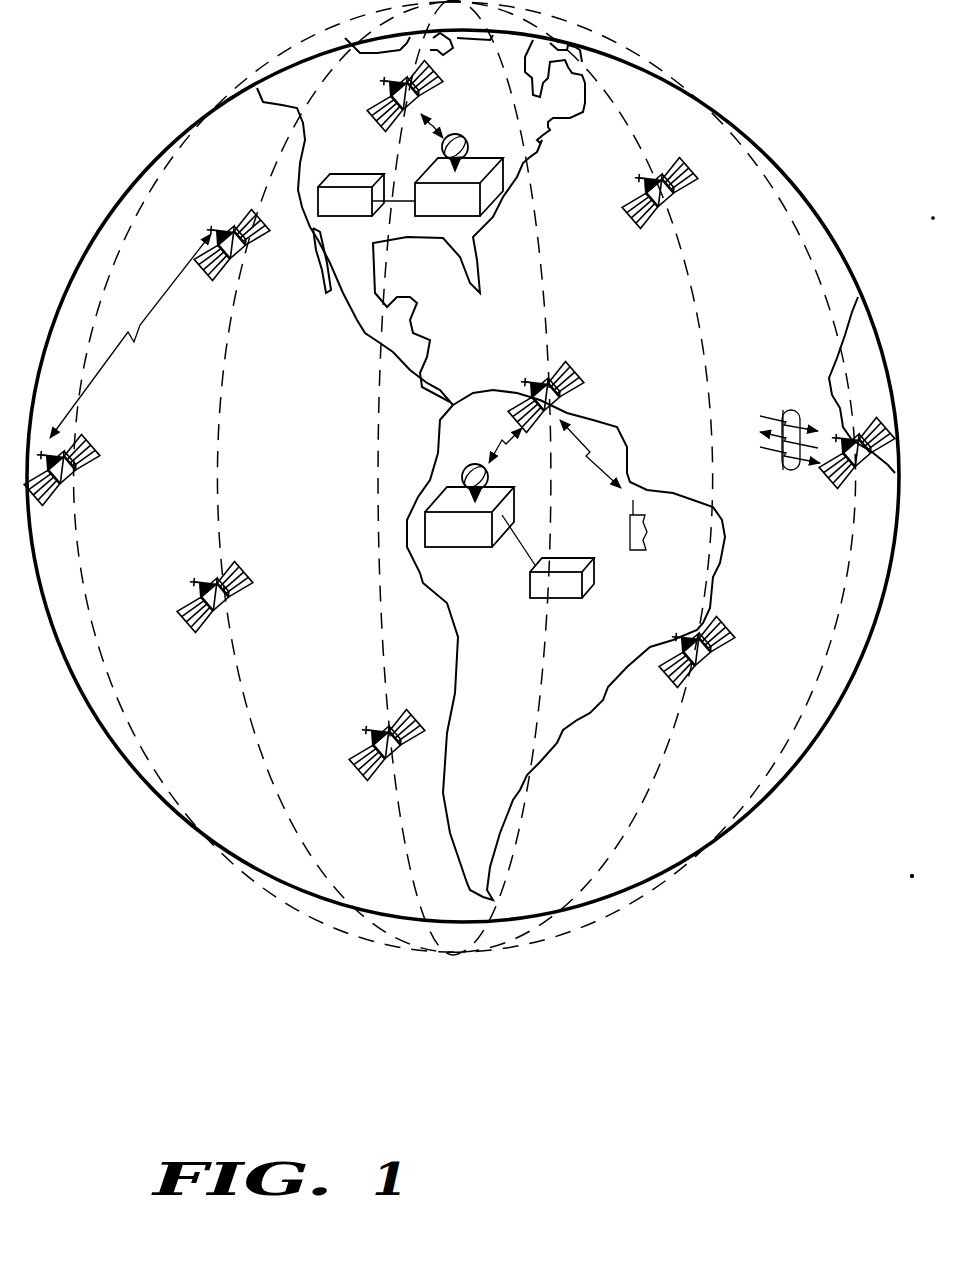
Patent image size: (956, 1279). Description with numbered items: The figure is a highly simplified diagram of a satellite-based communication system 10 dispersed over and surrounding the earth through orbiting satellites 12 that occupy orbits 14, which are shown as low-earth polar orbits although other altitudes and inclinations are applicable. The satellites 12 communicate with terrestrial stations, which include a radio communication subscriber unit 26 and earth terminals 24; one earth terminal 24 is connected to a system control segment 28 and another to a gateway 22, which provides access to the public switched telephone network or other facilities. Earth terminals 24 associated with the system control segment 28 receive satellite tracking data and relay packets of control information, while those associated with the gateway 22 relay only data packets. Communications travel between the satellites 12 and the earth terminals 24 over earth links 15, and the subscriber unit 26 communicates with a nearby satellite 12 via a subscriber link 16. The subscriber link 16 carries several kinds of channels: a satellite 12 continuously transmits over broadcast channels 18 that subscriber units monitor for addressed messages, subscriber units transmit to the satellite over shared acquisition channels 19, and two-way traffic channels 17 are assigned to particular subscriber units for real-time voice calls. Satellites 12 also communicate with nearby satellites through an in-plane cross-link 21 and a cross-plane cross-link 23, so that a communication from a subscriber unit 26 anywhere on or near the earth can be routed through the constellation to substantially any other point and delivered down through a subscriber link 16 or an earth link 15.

The satellite-based communication system 10 is at (458, 1054).
The satellite 12 is at (388, 133).
The orbit 14 is at (270, 166).
The earth link 15 is at (503, 453).
The subscriber link 16 is at (587, 437).
The traffic channel 17 is at (780, 414).
The broadcast channel 18 is at (763, 431).
The acquisition channel 19 is at (776, 455).
The in-plane cross-link 21 is at (215, 497).
The gateway 22 is at (565, 600).
The cross-plane cross-link 23 is at (146, 327).
The earth terminal 24 is at (483, 160).
The subscriber unit 26 is at (637, 552).
The system control segment 28 is at (335, 218).